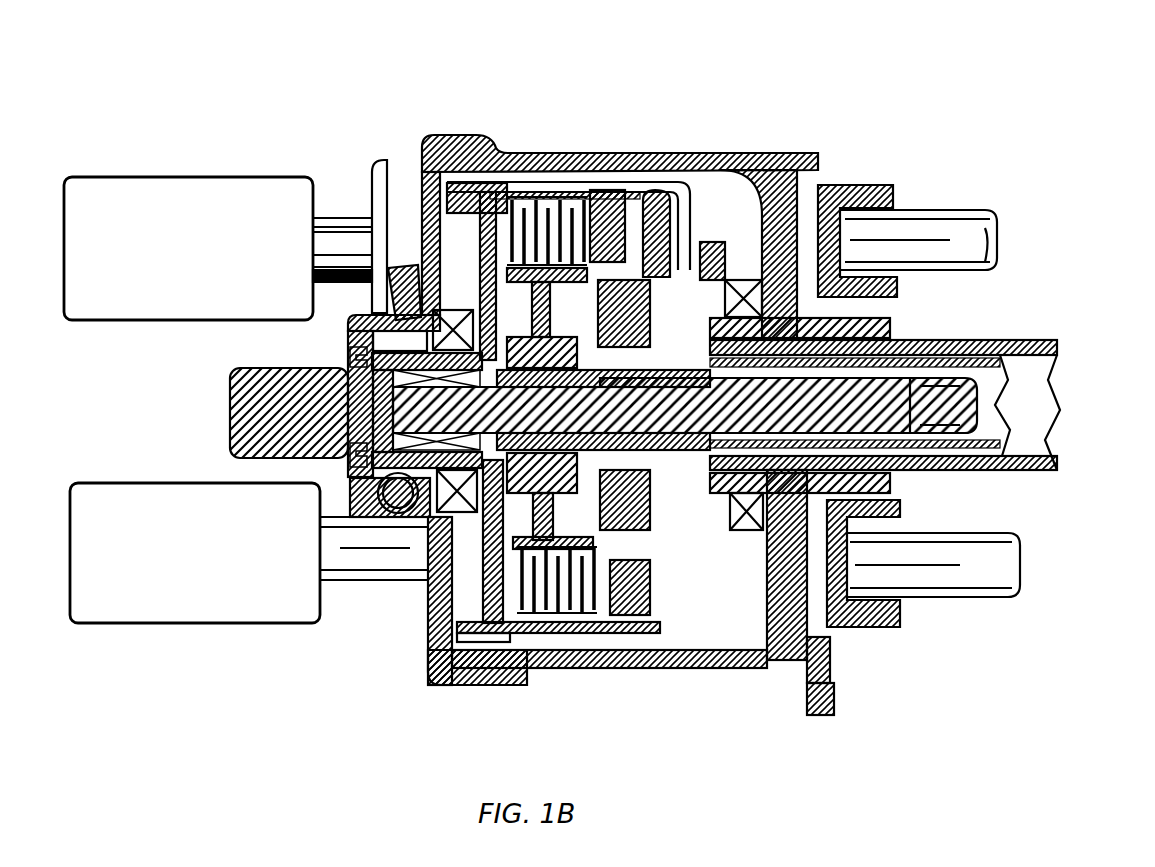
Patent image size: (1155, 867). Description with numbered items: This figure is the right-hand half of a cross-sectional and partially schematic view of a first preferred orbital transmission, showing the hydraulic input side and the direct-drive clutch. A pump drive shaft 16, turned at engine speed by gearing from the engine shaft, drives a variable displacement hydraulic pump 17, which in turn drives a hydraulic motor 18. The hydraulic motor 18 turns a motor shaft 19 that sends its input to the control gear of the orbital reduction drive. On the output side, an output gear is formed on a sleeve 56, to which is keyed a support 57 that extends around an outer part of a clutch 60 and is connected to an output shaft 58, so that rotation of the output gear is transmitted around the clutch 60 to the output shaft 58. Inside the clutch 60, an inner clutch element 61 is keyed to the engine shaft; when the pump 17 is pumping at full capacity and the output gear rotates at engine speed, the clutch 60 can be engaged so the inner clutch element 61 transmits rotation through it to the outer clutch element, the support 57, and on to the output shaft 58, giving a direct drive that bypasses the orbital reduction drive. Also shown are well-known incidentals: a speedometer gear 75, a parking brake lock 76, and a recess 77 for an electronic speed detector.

The pump drive shaft 16 is at (345, 218).
The variable displacement hydraulic pump 17 is at (108, 177).
The hydraulic motor 18 is at (112, 623).
The motor shaft 19 is at (347, 517).
The sleeve 56 is at (1047, 340).
The support 57 is at (687, 207).
The output shaft 58 is at (230, 372).
The clutch 60 is at (563, 633).
The inner clutch element 61 is at (575, 283).
The speedometer gear 75 is at (397, 497).
The parking brake lock 76 is at (473, 277).
The recess 77 is at (410, 300).